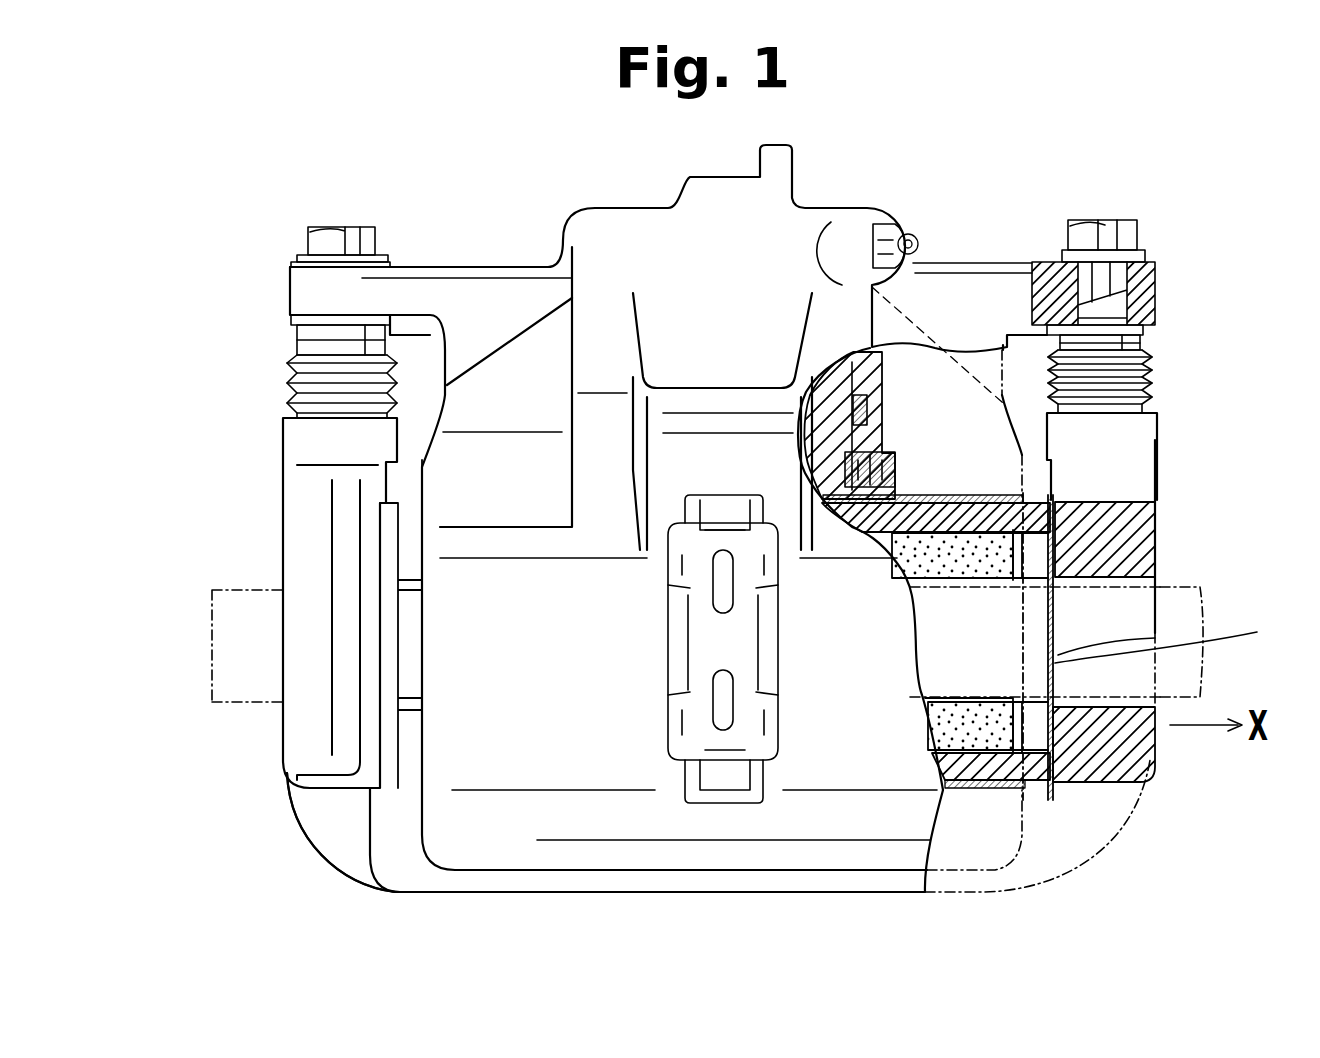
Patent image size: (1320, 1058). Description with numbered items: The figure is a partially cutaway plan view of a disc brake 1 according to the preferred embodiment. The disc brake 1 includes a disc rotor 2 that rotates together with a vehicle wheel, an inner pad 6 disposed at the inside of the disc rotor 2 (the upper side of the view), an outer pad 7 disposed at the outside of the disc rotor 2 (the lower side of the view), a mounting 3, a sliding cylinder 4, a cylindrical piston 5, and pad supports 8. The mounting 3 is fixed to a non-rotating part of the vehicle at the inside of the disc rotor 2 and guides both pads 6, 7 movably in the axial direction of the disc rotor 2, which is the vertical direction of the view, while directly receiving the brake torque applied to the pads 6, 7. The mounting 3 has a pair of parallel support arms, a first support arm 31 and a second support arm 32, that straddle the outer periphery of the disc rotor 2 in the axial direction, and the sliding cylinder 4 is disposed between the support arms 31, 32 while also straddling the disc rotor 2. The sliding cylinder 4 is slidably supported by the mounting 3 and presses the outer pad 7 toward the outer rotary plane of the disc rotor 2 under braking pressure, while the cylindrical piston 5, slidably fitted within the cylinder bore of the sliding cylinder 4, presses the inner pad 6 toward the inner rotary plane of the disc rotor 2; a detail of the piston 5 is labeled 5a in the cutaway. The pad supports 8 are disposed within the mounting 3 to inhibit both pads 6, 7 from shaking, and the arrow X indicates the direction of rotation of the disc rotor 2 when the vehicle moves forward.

The disc brake 1 is at (539, 226).
The disc rotor 2 is at (1177, 601).
The mounting 3 is at (335, 830).
The first support arm 31 is at (303, 735).
The second support arm 32 is at (1125, 482).
The sliding cylinder 4 is at (448, 638).
The cylindrical piston 5 is at (878, 436).
The piston seal groove 5a is at (837, 445).
The inner pad 6 is at (1038, 490).
The outer pad 7 is at (1025, 777).
The pad supports 8 is at (1170, 633).